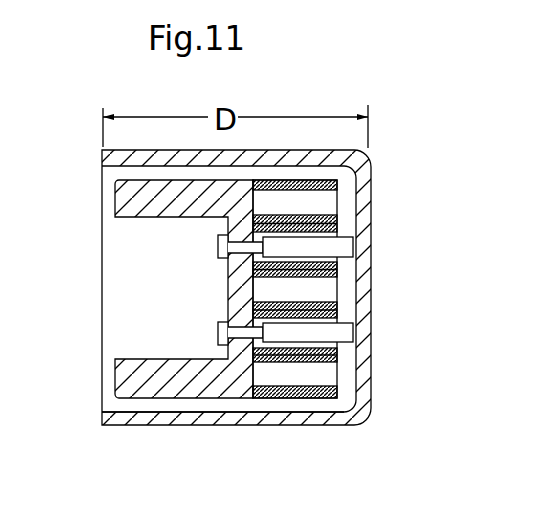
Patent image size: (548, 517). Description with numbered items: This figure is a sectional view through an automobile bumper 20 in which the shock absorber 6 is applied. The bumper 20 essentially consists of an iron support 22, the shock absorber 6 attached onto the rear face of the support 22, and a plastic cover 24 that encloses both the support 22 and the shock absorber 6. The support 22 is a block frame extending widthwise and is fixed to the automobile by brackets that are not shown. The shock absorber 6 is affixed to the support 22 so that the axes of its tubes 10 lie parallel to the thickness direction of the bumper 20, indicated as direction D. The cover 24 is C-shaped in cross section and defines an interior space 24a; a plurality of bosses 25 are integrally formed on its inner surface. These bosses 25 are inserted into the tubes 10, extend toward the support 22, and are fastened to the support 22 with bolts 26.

The bumper 20 is at (388, 158).
The plastic cover 24 is at (364, 377).
The interior space 24a is at (185, 407).
The iron support 22 is at (135, 199).
The bolts 26 is at (218, 248).
The bosses 25 is at (345, 247).
The tubes 10 is at (317, 202).
The shock absorber 6 is at (348, 396).